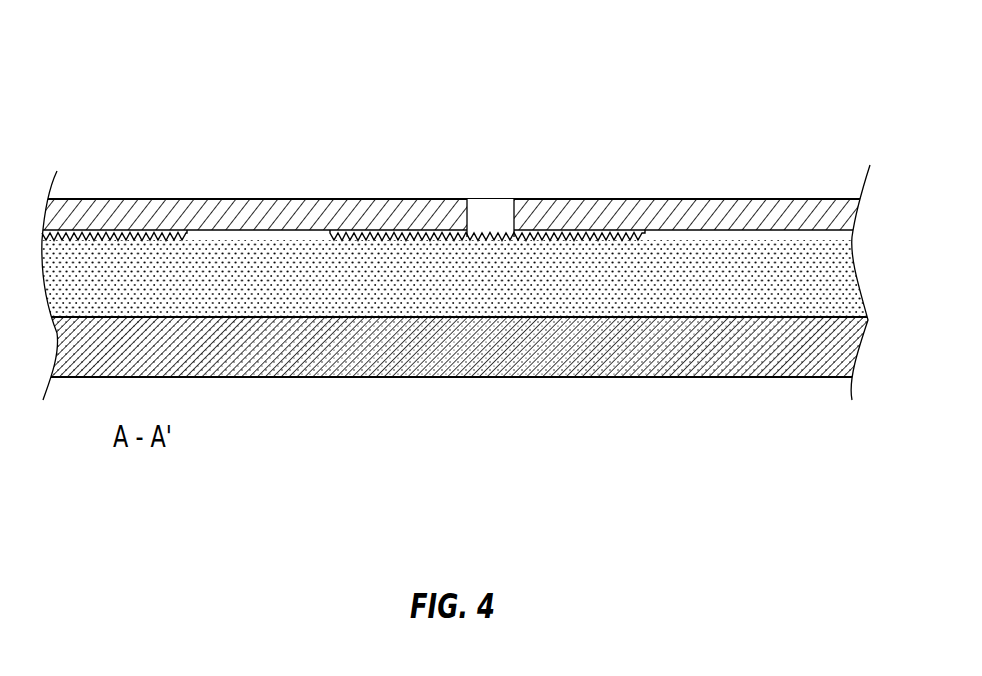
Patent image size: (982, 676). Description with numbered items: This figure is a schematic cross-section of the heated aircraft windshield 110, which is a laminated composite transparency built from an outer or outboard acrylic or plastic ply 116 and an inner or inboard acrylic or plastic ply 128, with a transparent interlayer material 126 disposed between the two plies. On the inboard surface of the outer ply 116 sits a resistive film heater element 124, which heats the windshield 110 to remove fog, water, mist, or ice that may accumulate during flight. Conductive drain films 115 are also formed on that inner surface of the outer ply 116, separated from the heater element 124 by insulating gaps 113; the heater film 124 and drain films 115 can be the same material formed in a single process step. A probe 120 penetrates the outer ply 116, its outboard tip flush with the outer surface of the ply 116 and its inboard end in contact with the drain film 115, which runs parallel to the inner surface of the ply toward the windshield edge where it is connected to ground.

The windshield 110 is at (787, 53).
The insulating gap 113 is at (280, 233).
The drain film 115 is at (392, 232).
The outer ply 116 is at (142, 217).
The probe 120 is at (483, 197).
The resistive film heater element 124 is at (157, 232).
The transparent interlayer material 126 is at (668, 285).
The inner ply 128 is at (348, 345).